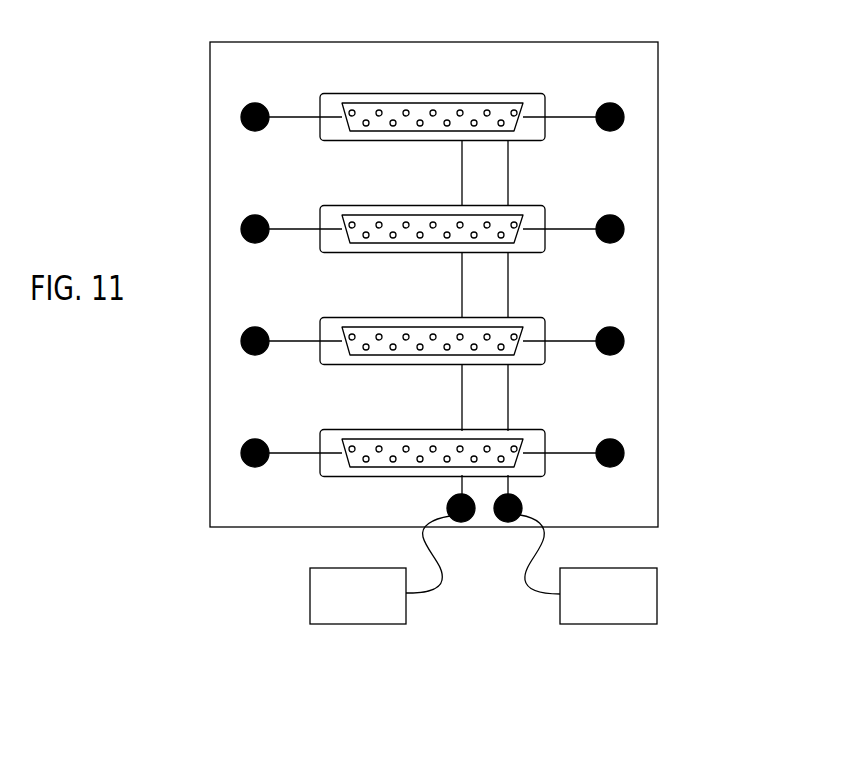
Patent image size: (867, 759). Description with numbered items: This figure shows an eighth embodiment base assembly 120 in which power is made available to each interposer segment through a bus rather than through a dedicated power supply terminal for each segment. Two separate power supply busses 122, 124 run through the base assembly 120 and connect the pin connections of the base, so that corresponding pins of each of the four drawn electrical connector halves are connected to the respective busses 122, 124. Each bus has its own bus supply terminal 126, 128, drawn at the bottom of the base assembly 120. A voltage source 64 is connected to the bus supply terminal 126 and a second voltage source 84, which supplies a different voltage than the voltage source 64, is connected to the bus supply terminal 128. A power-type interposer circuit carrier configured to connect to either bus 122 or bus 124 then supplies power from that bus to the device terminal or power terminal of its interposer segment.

The base assembly 120 is at (658, 185).
The power supply bus 122 is at (461, 407).
The power supply bus 124 is at (508, 410).
The bus supply terminal 126 is at (447, 505).
The bus supply terminal 128 is at (522, 503).
The voltage source 64 is at (310, 593).
The second voltage source 84 is at (657, 593).